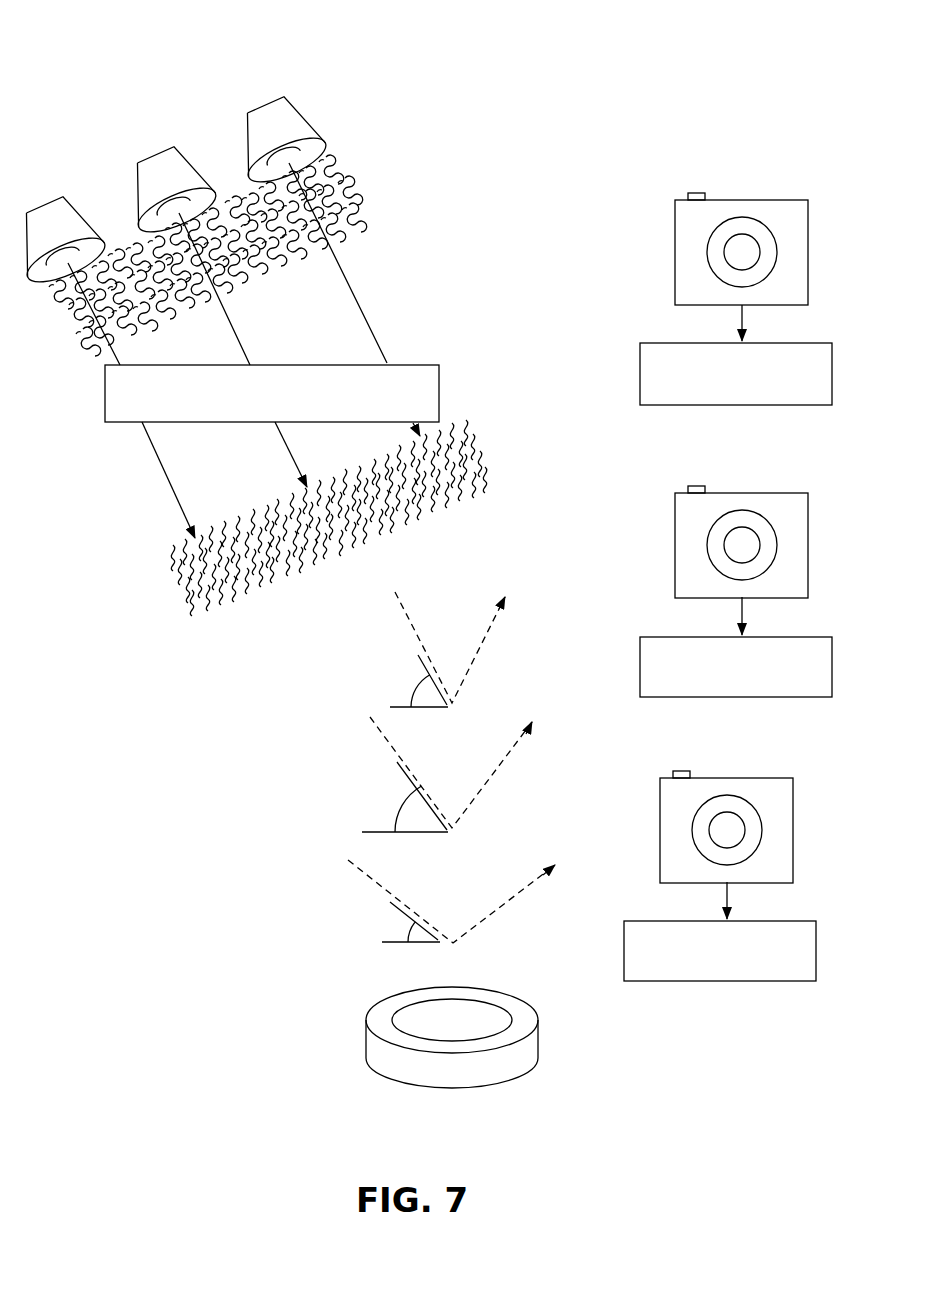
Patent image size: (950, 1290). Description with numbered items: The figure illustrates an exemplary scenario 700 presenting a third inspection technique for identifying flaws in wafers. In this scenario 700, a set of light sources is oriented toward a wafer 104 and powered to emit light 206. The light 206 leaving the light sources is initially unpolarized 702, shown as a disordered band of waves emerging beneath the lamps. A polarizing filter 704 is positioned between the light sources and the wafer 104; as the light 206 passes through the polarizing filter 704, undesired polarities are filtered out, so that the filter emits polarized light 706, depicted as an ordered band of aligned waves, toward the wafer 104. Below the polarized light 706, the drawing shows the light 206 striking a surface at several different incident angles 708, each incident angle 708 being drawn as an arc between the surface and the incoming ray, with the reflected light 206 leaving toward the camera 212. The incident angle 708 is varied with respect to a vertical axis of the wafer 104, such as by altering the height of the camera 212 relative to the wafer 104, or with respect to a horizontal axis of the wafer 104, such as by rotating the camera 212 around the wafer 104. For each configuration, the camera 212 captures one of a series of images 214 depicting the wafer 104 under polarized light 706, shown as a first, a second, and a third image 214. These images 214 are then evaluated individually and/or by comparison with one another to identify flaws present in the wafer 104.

The exemplary scenario 700 is at (124, 56).
The unpolarized light 702 is at (363, 186).
The polarizing filter 704 is at (393, 364).
The polarized light 706 is at (170, 562).
The incident angle 708 is at (423, 681).
The light 206 is at (493, 622).
The wafer 104 is at (402, 1010).
The camera 212 is at (732, 199).
The images 214 is at (755, 343).